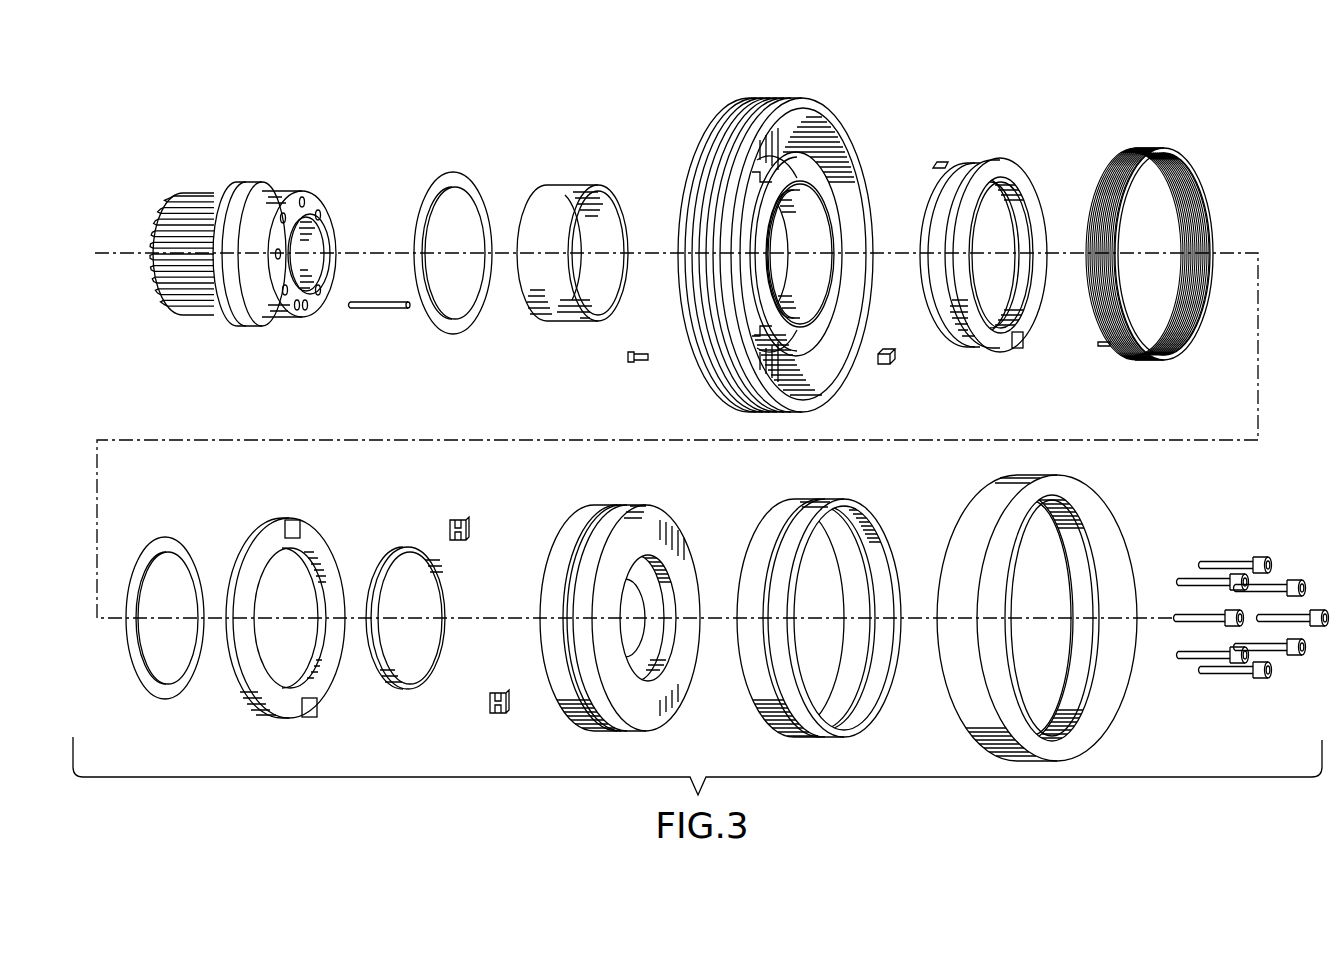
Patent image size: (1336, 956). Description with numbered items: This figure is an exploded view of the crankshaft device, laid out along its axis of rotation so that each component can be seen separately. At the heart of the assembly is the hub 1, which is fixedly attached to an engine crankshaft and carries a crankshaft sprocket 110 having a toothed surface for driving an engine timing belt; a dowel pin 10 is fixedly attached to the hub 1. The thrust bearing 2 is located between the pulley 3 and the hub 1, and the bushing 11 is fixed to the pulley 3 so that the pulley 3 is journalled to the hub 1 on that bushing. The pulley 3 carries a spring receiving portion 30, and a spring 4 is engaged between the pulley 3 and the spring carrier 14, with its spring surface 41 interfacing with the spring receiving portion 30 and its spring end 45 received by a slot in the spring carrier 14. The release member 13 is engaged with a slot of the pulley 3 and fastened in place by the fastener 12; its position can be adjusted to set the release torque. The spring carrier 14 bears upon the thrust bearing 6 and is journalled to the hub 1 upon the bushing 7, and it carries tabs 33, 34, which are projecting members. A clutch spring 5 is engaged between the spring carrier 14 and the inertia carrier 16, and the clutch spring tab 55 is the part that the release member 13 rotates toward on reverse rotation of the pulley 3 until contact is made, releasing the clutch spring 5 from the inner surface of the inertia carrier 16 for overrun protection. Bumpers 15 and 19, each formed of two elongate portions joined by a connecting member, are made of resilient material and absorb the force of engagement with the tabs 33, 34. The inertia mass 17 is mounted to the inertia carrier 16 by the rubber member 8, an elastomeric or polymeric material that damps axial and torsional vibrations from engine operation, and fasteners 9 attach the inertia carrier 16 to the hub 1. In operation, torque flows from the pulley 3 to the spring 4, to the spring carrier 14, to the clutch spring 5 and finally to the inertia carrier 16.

The hub 1 is at (213, 250).
The crankshaft sprocket 110 is at (180, 307).
The dowel pin 10 is at (372, 312).
The thrust bearing 2 is at (437, 178).
The bushing 11 is at (563, 185).
The fastener 12 is at (636, 365).
The pulley 3 is at (768, 260).
The spring receiving portion 30 is at (770, 338).
The release member 13 is at (890, 370).
The spring 4 is at (968, 253).
The spring surface 41 is at (938, 165).
The spring end 45 is at (1017, 350).
The clutch spring 5 is at (1143, 253).
The clutch spring tab 55 is at (1101, 347).
The thrust bearing 6 is at (170, 540).
The spring carrier 14 is at (276, 622).
The tab 33 is at (297, 520).
The tab 34 is at (310, 720).
The bushing 7 is at (395, 553).
The bumper 19 is at (447, 525).
The bumper 15 is at (492, 715).
The inertia carrier 16 is at (572, 520).
The rubber member 8 is at (770, 510).
The inertia mass 17 is at (985, 497).
The fasteners 9 is at (1233, 563).